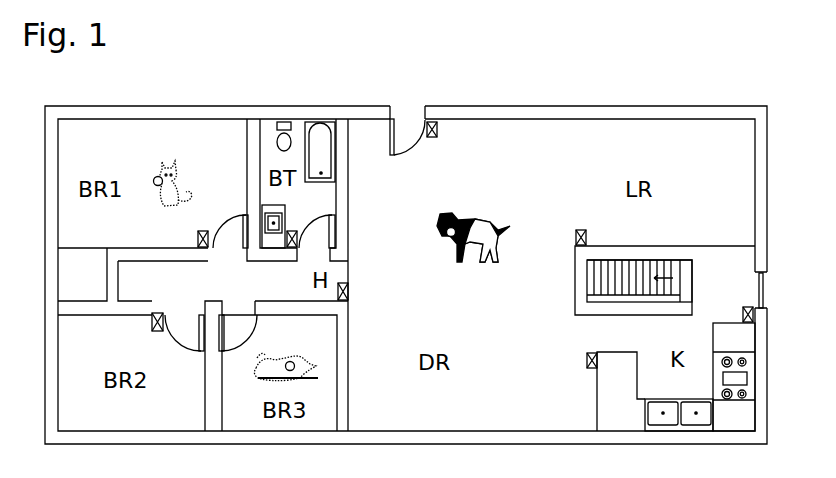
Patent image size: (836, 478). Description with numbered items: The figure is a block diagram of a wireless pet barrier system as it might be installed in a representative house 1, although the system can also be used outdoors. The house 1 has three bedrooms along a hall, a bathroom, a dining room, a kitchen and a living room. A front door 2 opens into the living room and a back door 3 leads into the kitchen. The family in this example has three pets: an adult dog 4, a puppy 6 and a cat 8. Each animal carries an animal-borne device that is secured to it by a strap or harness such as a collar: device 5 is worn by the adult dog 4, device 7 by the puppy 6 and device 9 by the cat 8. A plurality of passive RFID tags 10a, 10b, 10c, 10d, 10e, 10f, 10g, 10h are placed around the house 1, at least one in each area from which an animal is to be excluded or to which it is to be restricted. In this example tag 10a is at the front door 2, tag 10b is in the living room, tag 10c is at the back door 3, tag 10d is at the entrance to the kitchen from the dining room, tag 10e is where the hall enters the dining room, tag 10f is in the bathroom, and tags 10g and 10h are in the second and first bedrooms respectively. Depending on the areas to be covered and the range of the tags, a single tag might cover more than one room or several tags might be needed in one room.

The house 1 is at (735, 106).
The front door 2 is at (408, 117).
The back door 3 is at (767, 288).
The adult dog 4 is at (478, 219).
The animal-borne device 5 is at (447, 234).
The puppy 6 is at (281, 354).
The animal-borne device 7 is at (295, 371).
The cat 8 is at (186, 167).
The animal-borne device 9 is at (155, 185).
The passive RFID tag 10a is at (438, 136).
The passive RFID tag 10b is at (578, 232).
The passive RFID tag 10c is at (756, 314).
The passive RFID tag 10d is at (592, 369).
The passive RFID tag 10e is at (349, 293).
The passive RFID tag 10f is at (292, 249).
The passive RFID tag 10g is at (157, 313).
The passive RFID tag 10h is at (206, 249).